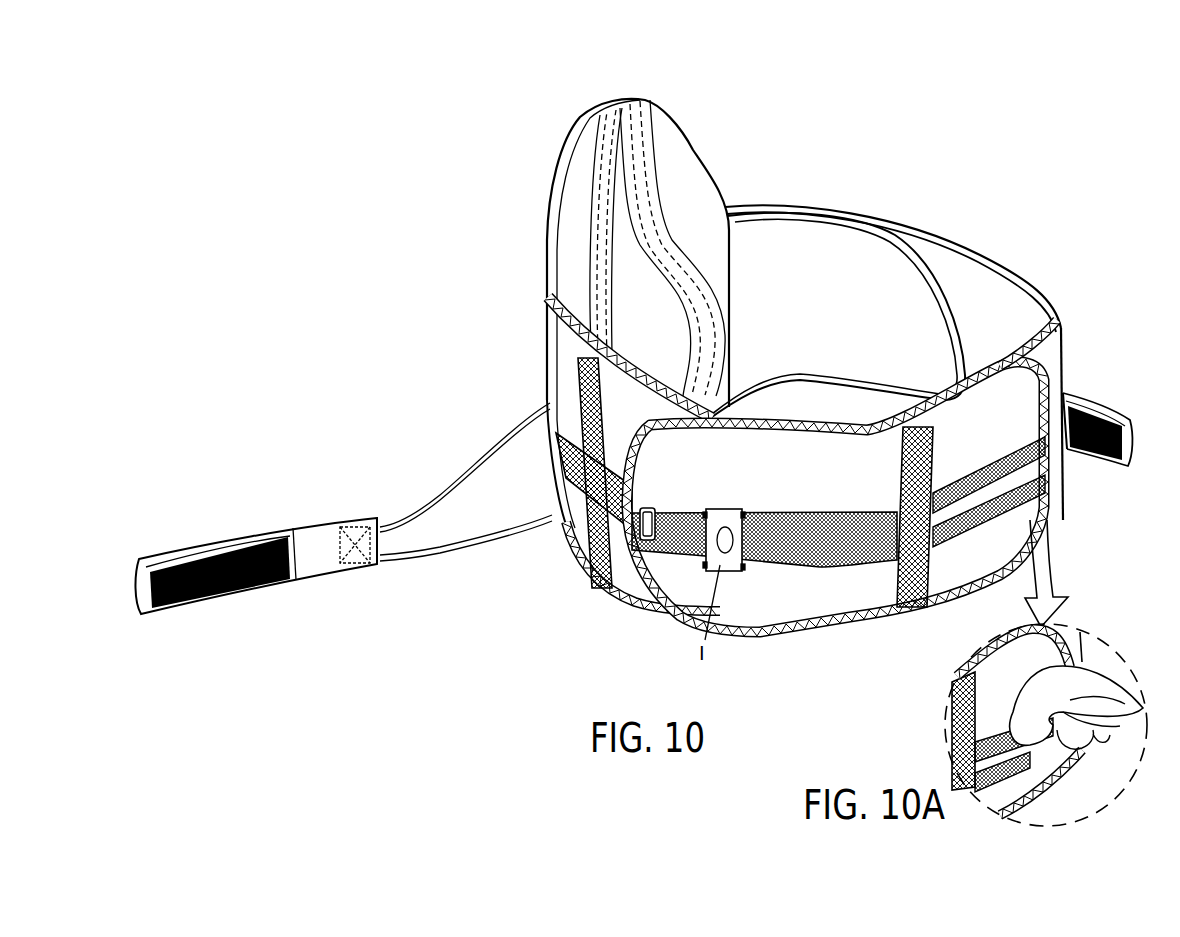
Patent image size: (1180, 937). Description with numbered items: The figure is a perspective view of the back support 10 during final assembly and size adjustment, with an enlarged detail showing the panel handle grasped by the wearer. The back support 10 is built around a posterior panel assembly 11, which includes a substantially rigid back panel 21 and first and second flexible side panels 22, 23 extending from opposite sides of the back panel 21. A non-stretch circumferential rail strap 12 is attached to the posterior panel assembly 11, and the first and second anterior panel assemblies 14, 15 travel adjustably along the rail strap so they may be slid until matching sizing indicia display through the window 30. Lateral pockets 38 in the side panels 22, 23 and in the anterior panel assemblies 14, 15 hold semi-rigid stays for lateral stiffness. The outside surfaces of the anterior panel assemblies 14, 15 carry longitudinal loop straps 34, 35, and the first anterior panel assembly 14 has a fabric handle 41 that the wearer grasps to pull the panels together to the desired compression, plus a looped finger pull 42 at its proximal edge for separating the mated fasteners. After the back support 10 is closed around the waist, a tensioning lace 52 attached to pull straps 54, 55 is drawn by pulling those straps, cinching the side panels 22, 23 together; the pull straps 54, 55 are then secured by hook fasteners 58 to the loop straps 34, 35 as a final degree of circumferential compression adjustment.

In FIG. 10, the back support 10 is at (883, 281).
In FIG. 10, the posterior panel assembly 11 is at (614, 253).
In FIG. 10, the first circumferential rail strap 12 is at (563, 470).
In FIG. 10, the first anterior panel assembly 14 is at (846, 597).
In FIG. 10, the second anterior panel assembly 15 is at (1055, 355).
In FIG. 10, the back panel 21 is at (678, 133).
In FIG. 10, the first side panel 22 is at (552, 380).
In FIG. 10, the second side panel 23 is at (800, 232).
In FIG. 10, the window 30 is at (727, 510).
In FIG. 10, the loop strap 34 is at (866, 512).
In FIG. 10, the loop strap 35 is at (1068, 393).
In FIG. 10, the lateral pocket 38 is at (600, 428).
In FIG. 10, the fabric handle 41 is at (1006, 480).
In FIG. 10A, the fabric handle 41 is at (1012, 752).
In FIG. 10, the looped finger pull 42 is at (652, 522).
In FIG. 10, the tensioning lace 52 is at (470, 490).
In FIG. 10, the pull strap 54 is at (1112, 416).
In FIG. 10, the pull strap 55 is at (176, 545).
In FIG. 10, the hook fastener 58 is at (244, 587).